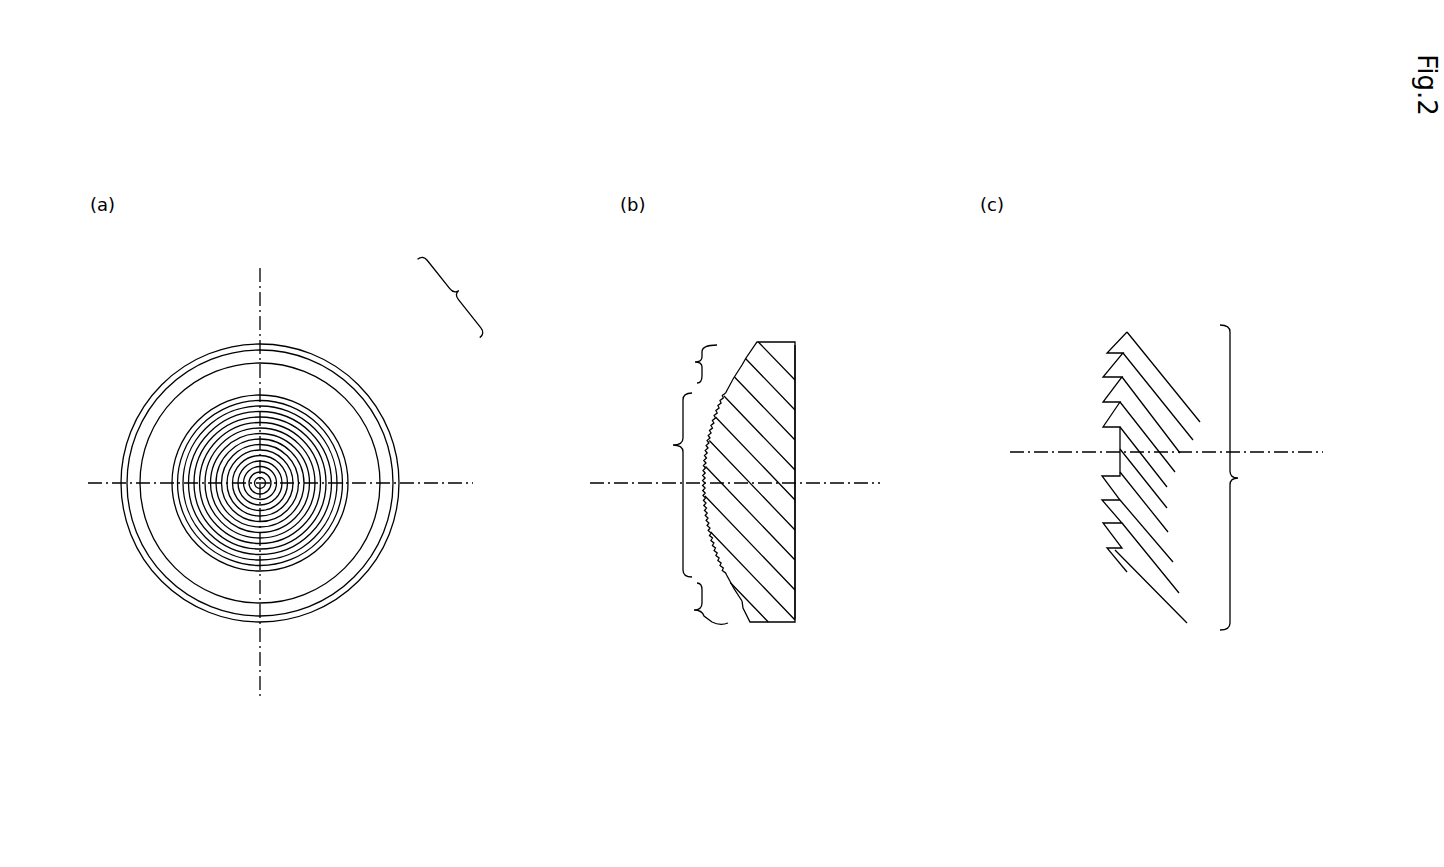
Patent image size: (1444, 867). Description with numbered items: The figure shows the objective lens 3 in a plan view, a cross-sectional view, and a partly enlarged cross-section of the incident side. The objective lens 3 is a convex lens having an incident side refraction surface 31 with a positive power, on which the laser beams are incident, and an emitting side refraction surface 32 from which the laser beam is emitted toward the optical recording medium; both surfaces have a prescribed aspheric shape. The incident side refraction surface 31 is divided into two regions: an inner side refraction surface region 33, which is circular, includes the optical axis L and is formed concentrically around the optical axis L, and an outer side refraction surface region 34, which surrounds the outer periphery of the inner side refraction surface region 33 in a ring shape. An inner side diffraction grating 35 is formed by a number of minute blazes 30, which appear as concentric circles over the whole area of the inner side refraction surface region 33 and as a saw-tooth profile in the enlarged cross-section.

The objective lens 3 is at (289, 316).
The minute blazes 30 is at (710, 520).
The incident side refraction surface 31 is at (662, 377).
The emitting side refraction surface 32 is at (795, 388).
The inner side refraction surface region 33 is at (747, 451).
The outer side refraction surface region 34 is at (350, 425).
The inner side diffraction grating 35 is at (285, 428).
The optical axis L is at (862, 484).